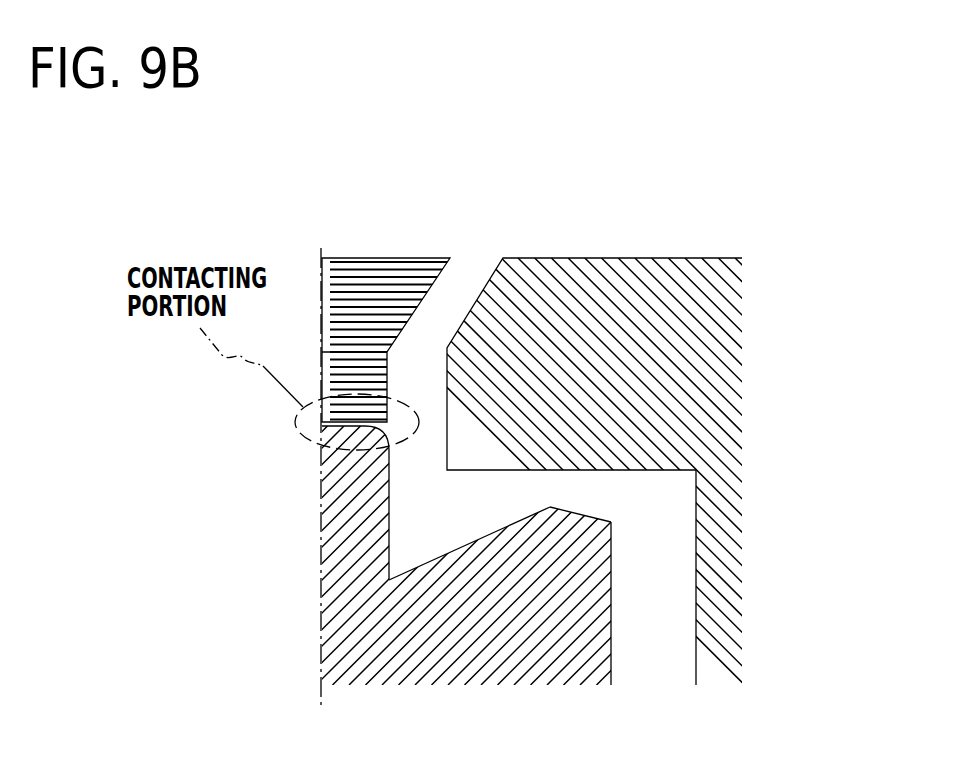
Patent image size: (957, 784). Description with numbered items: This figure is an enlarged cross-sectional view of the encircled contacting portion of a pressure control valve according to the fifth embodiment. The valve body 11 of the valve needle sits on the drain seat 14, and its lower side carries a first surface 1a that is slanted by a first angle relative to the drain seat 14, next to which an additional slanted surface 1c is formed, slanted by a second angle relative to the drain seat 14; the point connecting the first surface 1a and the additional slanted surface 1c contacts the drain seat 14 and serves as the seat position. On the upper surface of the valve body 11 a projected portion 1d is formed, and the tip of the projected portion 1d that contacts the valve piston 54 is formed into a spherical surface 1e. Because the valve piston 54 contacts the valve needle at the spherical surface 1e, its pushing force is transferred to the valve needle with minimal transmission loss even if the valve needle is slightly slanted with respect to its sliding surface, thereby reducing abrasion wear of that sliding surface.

The valve piston 54 is at (441, 301).
The drain seat 14 is at (547, 467).
The valve body 11 is at (470, 551).
The first surface 1a is at (463, 550).
The additional slanted surface 1c is at (580, 515).
The projected portion 1d is at (328, 493).
The spherical surface 1e is at (345, 424).